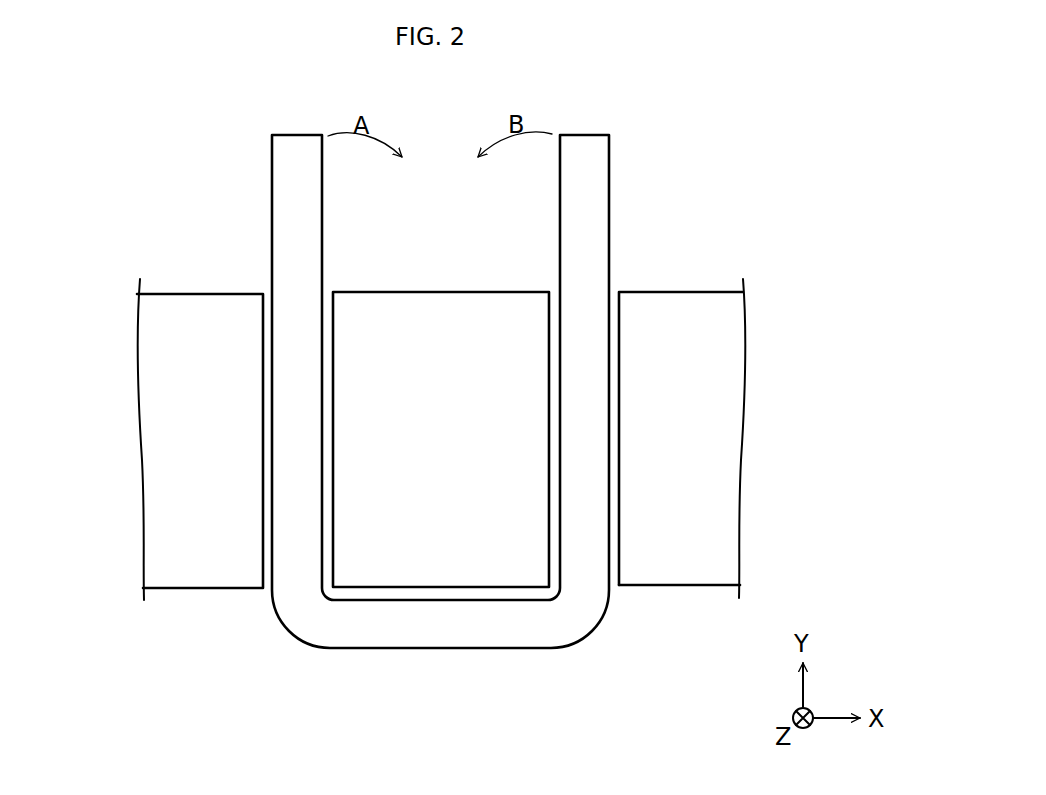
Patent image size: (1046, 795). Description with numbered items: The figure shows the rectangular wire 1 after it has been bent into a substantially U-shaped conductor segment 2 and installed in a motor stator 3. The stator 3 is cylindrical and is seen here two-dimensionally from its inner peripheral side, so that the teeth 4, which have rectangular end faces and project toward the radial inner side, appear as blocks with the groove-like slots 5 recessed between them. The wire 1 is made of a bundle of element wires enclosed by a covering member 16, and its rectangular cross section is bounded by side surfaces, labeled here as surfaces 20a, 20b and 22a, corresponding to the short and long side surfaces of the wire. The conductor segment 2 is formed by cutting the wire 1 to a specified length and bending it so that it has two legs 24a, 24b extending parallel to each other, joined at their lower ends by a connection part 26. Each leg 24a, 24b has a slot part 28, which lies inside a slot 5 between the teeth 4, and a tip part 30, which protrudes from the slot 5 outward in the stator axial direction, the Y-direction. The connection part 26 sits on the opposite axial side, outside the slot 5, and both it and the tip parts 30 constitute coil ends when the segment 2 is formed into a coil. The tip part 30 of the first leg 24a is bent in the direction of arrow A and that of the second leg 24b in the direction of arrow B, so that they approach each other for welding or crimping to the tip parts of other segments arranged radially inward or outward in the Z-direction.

The rectangular wire 1 is at (615, 130).
The conductor segment 2 is at (453, 650).
The motor stator 3 is at (446, 292).
The teeth 4 is at (180, 300).
The slots 5 is at (327, 298).
The covering member 16 is at (305, 215).
The inner surface of side wall 20a is at (322, 352).
The outer surface of side wall 20b is at (275, 347).
The side surface of cell 22a is at (308, 537).
The first leg 24a is at (325, 183).
The second leg 24b is at (611, 180).
The connection part 26 is at (508, 650).
The slot part 28 is at (258, 295).
The tip part 30 is at (258, 134).